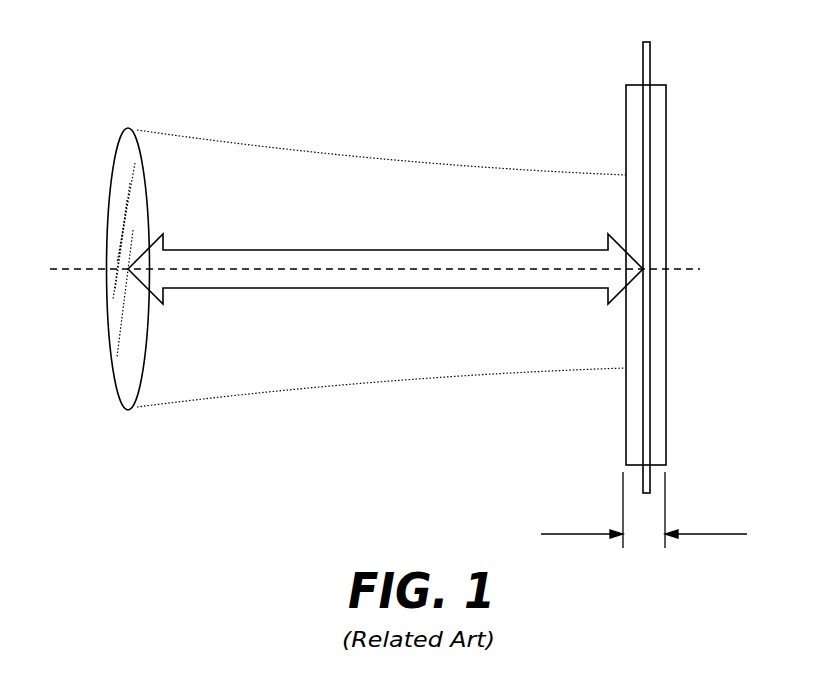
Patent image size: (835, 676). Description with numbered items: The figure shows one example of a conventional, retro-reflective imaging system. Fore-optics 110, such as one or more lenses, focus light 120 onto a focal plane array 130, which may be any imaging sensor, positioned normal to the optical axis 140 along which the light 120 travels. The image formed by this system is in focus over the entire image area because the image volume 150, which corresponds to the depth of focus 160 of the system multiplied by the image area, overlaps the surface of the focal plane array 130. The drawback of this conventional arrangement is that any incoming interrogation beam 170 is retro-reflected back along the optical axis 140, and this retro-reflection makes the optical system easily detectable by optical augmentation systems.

The fore-optics 110 is at (118, 146).
The light 120 is at (293, 151).
The focal plane array 130 is at (650, 70).
The optical axis 140 is at (700, 269).
The image volume 150 is at (666, 407).
The depth of focus 160 is at (713, 533).
The interrogation beam 170 is at (507, 248).